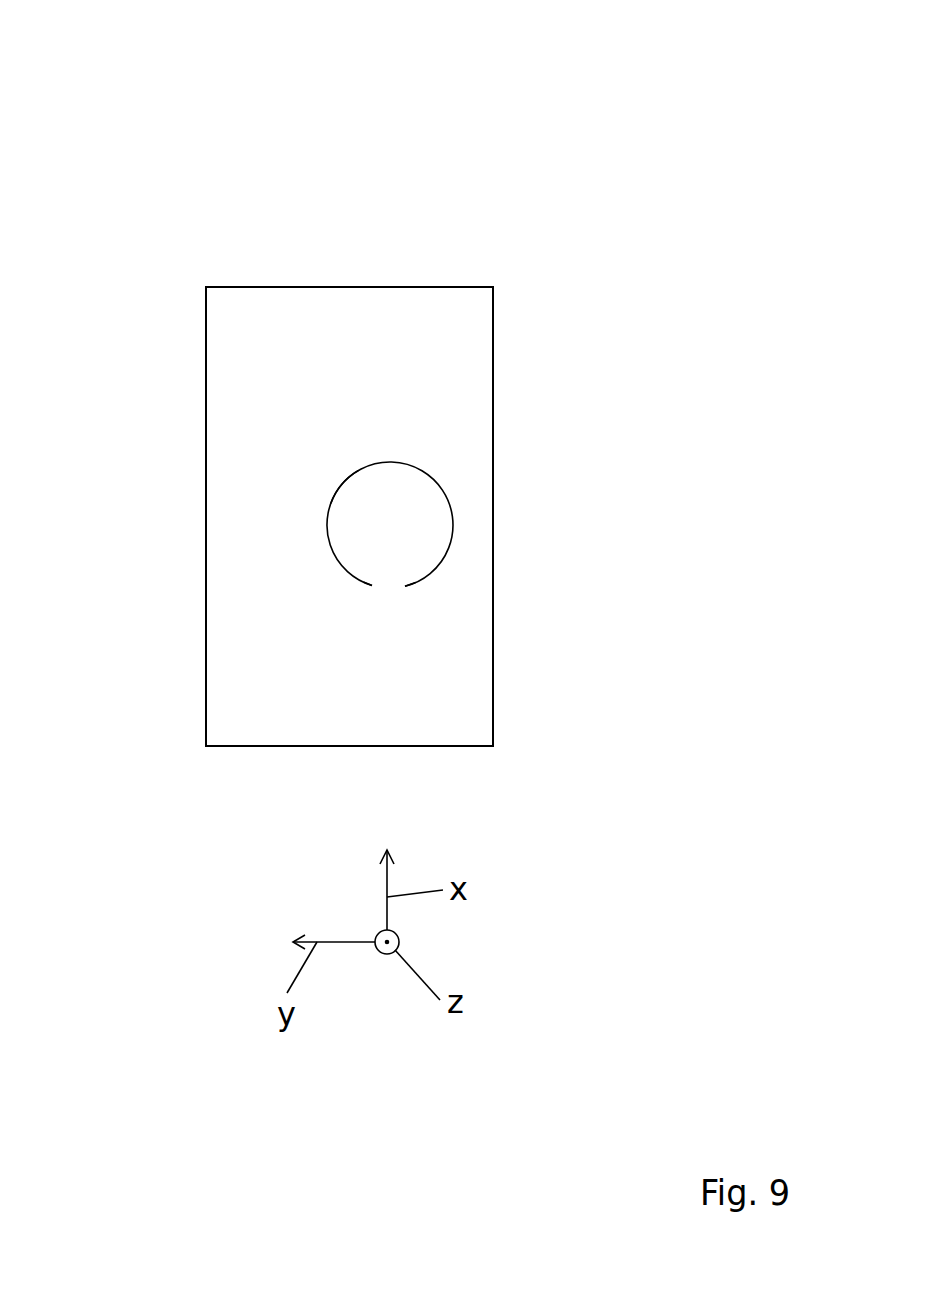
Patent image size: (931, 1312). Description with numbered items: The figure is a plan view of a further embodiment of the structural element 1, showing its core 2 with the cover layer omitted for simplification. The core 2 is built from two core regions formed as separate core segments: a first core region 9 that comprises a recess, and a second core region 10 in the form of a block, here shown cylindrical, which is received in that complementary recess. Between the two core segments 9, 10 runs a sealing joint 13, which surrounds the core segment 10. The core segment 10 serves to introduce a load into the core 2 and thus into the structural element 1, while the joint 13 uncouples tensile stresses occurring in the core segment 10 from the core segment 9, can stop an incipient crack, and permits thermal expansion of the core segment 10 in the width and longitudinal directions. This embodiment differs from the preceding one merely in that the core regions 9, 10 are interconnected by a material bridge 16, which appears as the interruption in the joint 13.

The structural element 1 is at (124, 93).
The core 2 is at (352, 282).
The first core region 9 is at (241, 560).
The second core region 10 is at (397, 510).
The sealing joint 13 is at (344, 479).
The material bridge 16 is at (386, 585).